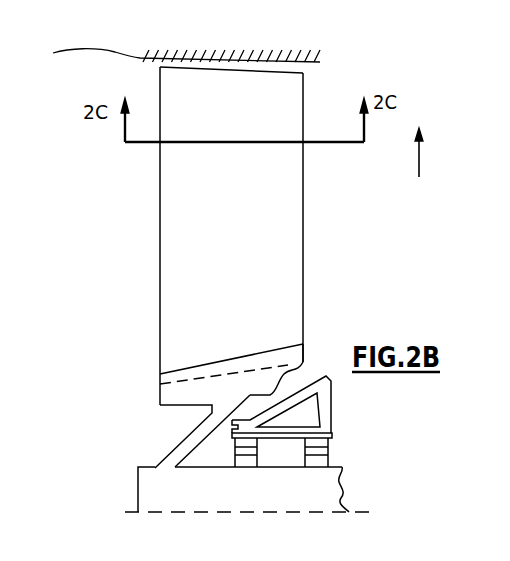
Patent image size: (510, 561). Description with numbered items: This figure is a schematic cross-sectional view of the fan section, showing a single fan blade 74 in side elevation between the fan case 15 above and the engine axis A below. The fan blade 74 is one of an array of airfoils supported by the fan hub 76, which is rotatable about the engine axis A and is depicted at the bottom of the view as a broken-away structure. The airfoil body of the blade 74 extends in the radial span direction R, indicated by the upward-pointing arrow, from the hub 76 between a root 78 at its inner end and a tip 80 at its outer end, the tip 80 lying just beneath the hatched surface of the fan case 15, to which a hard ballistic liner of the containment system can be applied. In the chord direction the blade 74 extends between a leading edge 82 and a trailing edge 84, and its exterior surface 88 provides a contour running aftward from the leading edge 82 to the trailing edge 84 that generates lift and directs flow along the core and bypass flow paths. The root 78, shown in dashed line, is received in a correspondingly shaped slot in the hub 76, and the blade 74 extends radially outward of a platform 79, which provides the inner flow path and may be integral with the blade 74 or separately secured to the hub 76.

The fan case 15 is at (140, 56).
The fan blade 74 is at (326, 257).
The fan hub 76 is at (180, 453).
The root 78 is at (160, 384).
The platform 79 is at (178, 370).
The tip 80 is at (267, 73).
The leading edge 82 is at (160, 208).
The trailing edge 84 is at (303, 180).
The exterior surface 88 is at (280, 230).
The radial span direction R is at (419, 157).
The engine axis A is at (359, 512).